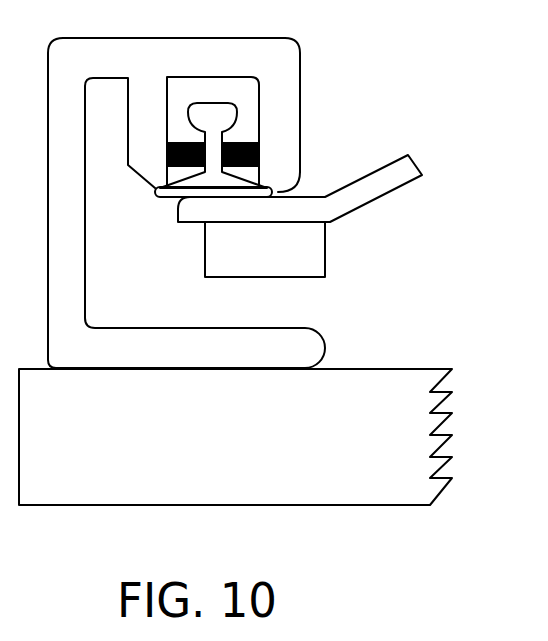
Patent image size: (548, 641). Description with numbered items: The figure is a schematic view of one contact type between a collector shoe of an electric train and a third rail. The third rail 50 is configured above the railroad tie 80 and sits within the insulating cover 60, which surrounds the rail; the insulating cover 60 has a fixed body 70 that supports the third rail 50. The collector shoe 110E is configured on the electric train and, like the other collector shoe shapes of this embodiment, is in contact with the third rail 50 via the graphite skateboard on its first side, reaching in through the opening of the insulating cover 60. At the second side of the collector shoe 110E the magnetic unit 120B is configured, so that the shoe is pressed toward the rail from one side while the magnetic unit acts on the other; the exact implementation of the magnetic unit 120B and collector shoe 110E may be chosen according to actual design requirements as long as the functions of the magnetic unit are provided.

The insulating cover 60 is at (282, 55).
The third rail 50 is at (237, 120).
The fixed body 70 is at (262, 154).
The collector shoe 110E is at (375, 200).
The magnetic unit 120B is at (265, 249).
The railroad tie 80 is at (235, 437).